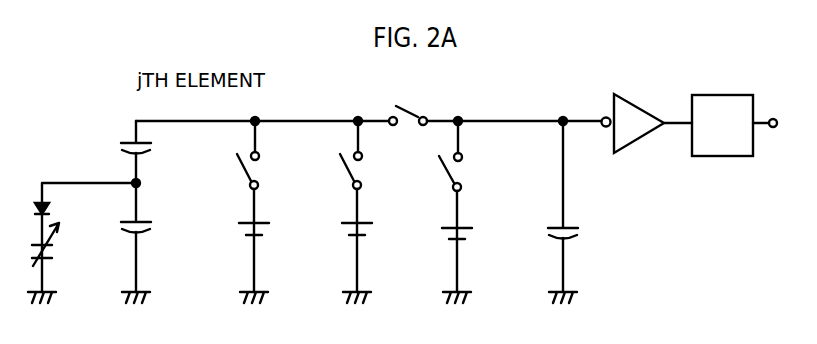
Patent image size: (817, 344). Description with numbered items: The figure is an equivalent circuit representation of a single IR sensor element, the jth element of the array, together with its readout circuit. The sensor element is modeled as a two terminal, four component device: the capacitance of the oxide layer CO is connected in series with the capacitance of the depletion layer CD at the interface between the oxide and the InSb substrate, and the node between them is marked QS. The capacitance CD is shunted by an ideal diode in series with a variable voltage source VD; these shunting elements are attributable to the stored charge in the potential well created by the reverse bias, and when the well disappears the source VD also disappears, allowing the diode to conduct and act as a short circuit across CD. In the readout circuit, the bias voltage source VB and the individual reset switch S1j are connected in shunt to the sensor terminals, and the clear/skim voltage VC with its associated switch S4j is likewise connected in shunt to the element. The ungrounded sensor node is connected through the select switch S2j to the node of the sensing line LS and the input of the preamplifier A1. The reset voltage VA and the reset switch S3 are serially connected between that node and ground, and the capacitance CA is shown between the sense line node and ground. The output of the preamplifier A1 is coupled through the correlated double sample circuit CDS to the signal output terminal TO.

The sensing line LS is at (368, 110).
The capacitance of the oxide layer CO is at (150, 152).
The capacitance of the depletion layer CD is at (150, 243).
The node QS is at (91, 179).
The variable voltage source VD is at (54, 253).
The reset switch S1j is at (264, 155).
The switch S4j is at (368, 155).
The select switch S2j is at (408, 103).
The reset switch S3 is at (465, 156).
The bias voltage source VB is at (268, 246).
The clear/skim voltage VC is at (371, 246).
The reset voltage VA is at (473, 247).
The capacitance CA is at (577, 212).
The preamplifier A1 is at (647, 123).
The correlated double sample circuit CDS is at (722, 125).
The signal output terminal TO is at (780, 126).